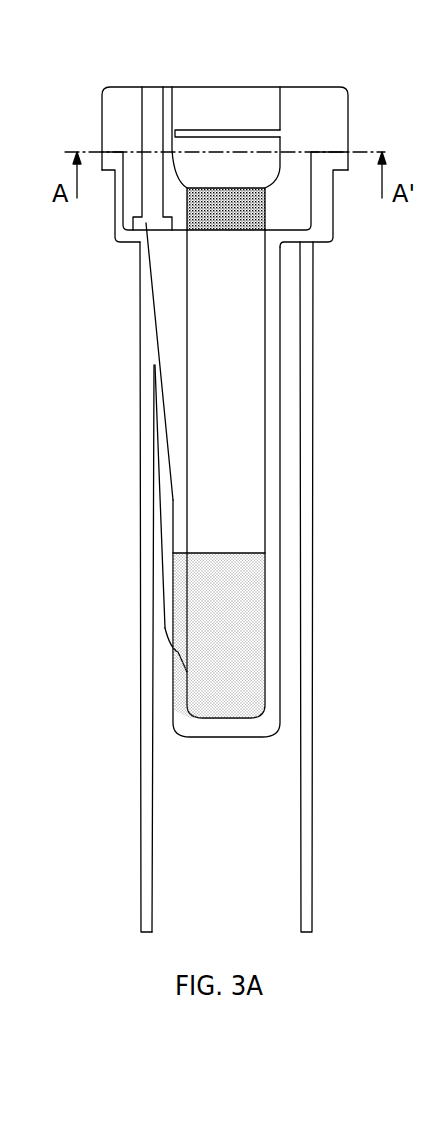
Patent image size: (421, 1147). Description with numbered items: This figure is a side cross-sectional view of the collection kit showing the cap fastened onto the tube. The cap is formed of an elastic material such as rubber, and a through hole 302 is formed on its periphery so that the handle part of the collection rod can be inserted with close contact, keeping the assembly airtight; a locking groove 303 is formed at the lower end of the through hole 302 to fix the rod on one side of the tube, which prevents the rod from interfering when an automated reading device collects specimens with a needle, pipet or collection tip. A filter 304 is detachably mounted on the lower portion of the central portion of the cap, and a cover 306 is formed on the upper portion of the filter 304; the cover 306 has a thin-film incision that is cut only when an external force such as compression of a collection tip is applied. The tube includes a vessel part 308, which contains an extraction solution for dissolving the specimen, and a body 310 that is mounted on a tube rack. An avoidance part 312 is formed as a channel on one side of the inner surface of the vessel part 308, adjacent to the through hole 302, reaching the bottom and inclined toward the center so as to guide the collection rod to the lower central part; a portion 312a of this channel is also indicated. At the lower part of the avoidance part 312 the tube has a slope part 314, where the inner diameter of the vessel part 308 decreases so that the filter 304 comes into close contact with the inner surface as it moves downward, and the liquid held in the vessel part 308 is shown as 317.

The through hole 302 is at (155, 100).
The locking groove 303 is at (140, 242).
The filter 304 is at (230, 232).
The cover 306 is at (231, 130).
The vessel part 308 is at (282, 510).
The body 310 is at (300, 361).
The avoidance part 312 is at (175, 352).
The needle tube bent portion 312a is at (158, 432).
The slope part 314 is at (175, 643).
The sample liquid 317 is at (250, 650).